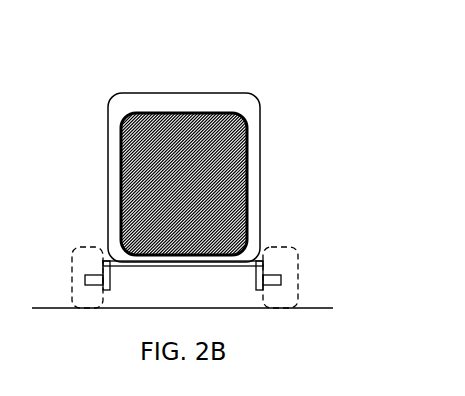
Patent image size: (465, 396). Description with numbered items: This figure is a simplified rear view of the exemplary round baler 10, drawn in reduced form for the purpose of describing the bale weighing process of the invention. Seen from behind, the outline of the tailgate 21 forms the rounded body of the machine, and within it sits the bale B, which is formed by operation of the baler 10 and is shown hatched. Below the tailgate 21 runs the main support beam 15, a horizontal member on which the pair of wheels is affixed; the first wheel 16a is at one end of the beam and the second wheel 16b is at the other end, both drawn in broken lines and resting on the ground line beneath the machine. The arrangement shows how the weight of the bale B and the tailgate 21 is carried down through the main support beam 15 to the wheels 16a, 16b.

The round baler 10 is at (125, 88).
The tailgate 21 is at (210, 93).
The bale B is at (215, 180).
The main support beam 15 is at (203, 267).
The wheel 16a is at (78, 262).
The wheel 16b is at (280, 260).